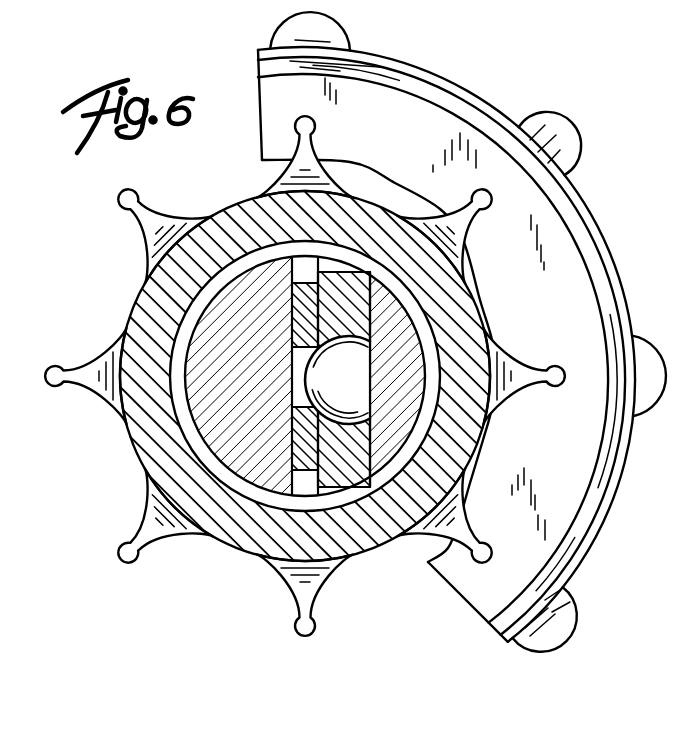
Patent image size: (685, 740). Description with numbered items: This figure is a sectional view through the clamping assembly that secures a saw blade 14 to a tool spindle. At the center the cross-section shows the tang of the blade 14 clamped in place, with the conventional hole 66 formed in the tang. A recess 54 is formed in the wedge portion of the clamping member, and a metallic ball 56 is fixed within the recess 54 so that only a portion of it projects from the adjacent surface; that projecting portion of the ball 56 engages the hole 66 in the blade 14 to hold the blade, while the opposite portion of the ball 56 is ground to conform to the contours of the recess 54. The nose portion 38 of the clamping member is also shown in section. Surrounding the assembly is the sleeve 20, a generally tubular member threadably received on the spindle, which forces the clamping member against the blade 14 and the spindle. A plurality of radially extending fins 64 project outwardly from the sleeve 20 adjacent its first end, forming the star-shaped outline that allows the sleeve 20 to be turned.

The sleeve 20 is at (466, 278).
The radially extending fins 64 is at (311, 146).
The nose portion 38 is at (350, 443).
The hole 66 is at (290, 353).
The blade 14 is at (314, 302).
The recess 54 is at (366, 352).
The ball 56 is at (360, 335).